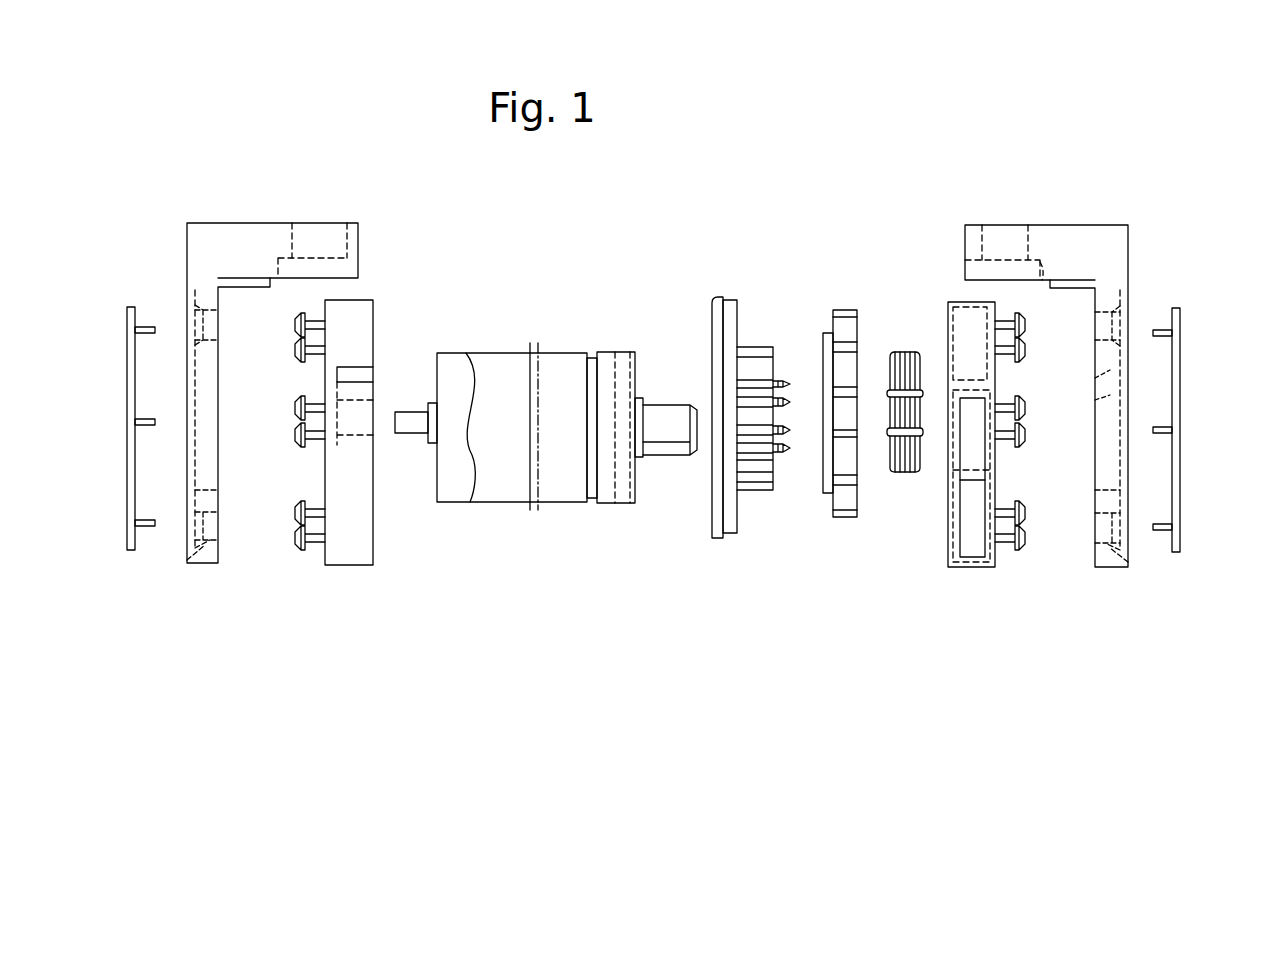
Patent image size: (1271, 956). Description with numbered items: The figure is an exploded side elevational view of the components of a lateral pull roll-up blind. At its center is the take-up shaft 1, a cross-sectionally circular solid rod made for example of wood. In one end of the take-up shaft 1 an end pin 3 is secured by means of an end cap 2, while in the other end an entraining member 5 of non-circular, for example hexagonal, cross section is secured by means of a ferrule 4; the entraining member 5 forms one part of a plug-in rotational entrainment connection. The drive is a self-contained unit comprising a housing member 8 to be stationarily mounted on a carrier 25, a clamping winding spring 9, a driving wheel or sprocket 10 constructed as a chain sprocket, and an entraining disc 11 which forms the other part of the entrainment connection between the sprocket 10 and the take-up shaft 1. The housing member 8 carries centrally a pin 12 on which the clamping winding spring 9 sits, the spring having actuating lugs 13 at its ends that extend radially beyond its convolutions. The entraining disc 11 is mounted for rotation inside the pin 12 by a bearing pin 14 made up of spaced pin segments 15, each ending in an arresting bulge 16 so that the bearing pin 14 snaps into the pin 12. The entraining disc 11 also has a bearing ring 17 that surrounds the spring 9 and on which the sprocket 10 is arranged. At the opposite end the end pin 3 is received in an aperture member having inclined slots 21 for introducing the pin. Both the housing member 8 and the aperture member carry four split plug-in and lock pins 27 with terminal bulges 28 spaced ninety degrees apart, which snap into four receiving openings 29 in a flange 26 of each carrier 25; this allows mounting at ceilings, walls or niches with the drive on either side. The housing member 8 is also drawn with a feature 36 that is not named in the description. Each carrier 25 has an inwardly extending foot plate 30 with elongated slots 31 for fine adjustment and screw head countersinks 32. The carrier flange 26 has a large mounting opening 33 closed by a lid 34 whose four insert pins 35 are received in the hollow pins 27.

The take-up shaft 1 is at (492, 363).
The end cap 2 is at (452, 492).
The end pin 3 is at (410, 425).
The ferrule 4 is at (623, 358).
The entraining member 5 is at (663, 435).
The housing member 8 is at (963, 322).
The clamping winding spring 9 is at (912, 450).
The driving wheel or sprocket 10 is at (838, 323).
The entraining disc 11 is at (720, 315).
The pin 12 is at (955, 507).
The actuating lugs 13 is at (917, 353).
The bearing pin 14 is at (782, 361).
The pin segments 15 is at (790, 453).
The arresting bulge 16 is at (792, 398).
The bearing ring 17 is at (750, 347).
The inclined slots 21 is at (353, 372).
The carrier 25 is at (166, 301).
The flange 26 is at (210, 560).
The split plug-in and lock pins 27 is at (315, 325).
The terminal bulges 28 is at (298, 341).
The snap-in receiving openings 29 is at (217, 537).
The foot plates 30 is at (252, 235).
The elongated slots 31 is at (992, 228).
The screw head recesses or countersinks 32 is at (1037, 258).
The mounting opening 33 is at (1093, 381).
The lid 34 is at (130, 325).
The insert pins 35 is at (140, 421).
The slot 36 is at (965, 545).